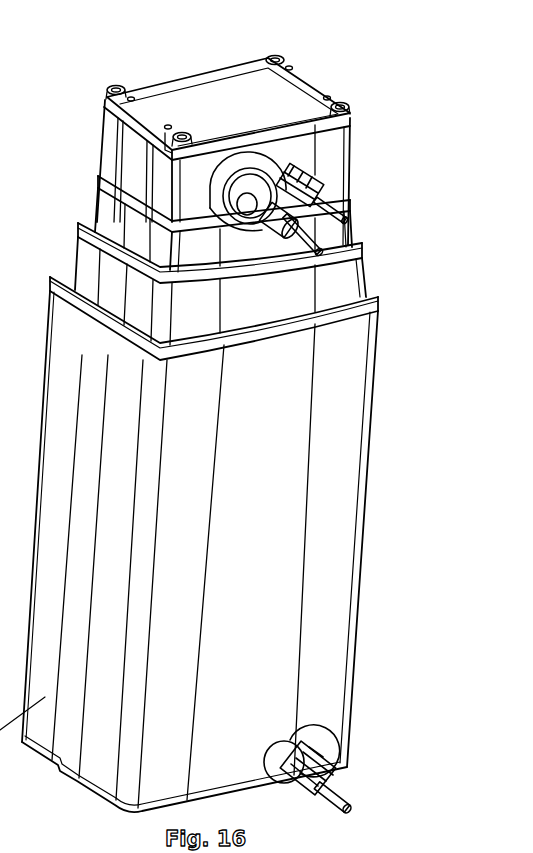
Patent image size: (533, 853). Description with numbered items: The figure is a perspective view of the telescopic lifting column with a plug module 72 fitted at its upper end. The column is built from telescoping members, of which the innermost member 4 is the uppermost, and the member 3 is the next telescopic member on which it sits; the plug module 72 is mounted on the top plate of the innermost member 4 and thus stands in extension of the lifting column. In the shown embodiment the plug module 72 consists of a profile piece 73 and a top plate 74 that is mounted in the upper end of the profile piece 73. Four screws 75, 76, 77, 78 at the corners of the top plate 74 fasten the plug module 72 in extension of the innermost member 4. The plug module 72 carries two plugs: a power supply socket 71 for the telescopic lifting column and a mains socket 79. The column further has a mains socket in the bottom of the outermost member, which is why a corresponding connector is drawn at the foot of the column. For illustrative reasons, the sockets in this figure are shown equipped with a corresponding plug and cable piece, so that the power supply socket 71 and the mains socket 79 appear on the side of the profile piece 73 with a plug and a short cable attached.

The base body 3 is at (83, 262).
The innermost member 4 is at (100, 213).
The power supply socket 71 is at (318, 167).
The plug module 72 is at (92, 119).
The profile piece 73 is at (107, 162).
The top plate 74 is at (205, 78).
The screw 75 is at (115, 86).
The screw 76 is at (193, 135).
The screw 77 is at (281, 57).
The screw 78 is at (345, 104).
The mains socket 79 is at (268, 155).